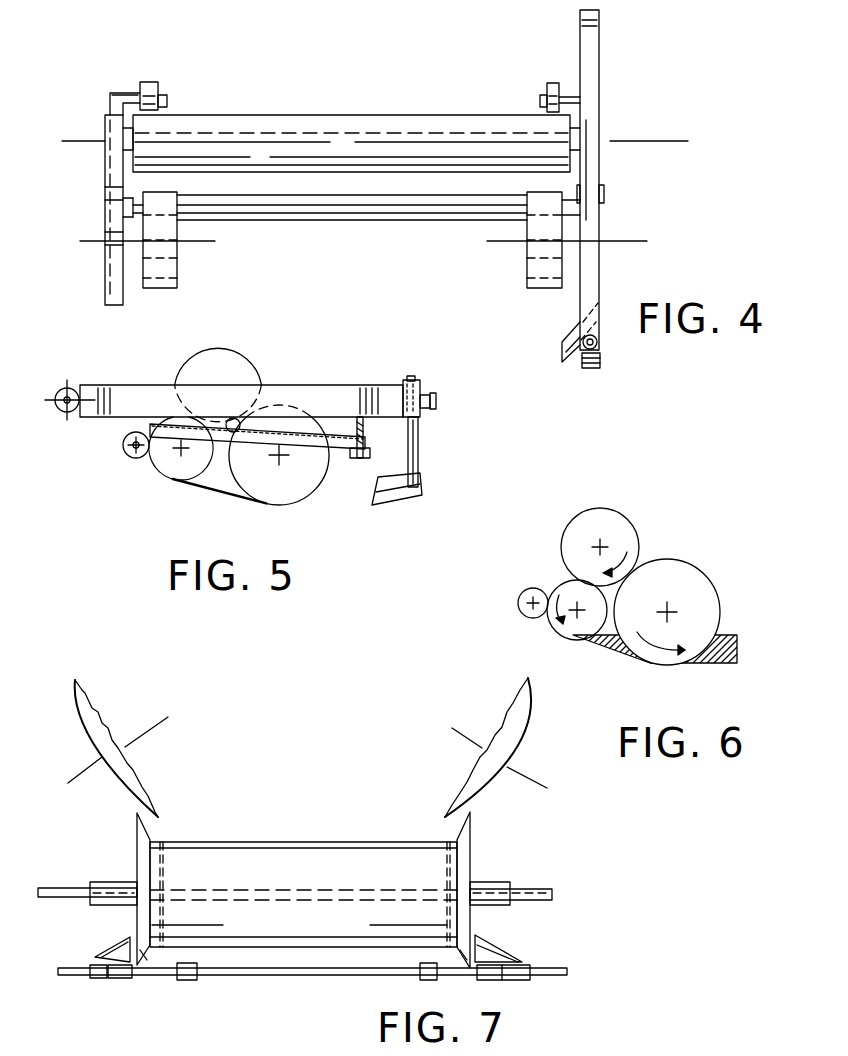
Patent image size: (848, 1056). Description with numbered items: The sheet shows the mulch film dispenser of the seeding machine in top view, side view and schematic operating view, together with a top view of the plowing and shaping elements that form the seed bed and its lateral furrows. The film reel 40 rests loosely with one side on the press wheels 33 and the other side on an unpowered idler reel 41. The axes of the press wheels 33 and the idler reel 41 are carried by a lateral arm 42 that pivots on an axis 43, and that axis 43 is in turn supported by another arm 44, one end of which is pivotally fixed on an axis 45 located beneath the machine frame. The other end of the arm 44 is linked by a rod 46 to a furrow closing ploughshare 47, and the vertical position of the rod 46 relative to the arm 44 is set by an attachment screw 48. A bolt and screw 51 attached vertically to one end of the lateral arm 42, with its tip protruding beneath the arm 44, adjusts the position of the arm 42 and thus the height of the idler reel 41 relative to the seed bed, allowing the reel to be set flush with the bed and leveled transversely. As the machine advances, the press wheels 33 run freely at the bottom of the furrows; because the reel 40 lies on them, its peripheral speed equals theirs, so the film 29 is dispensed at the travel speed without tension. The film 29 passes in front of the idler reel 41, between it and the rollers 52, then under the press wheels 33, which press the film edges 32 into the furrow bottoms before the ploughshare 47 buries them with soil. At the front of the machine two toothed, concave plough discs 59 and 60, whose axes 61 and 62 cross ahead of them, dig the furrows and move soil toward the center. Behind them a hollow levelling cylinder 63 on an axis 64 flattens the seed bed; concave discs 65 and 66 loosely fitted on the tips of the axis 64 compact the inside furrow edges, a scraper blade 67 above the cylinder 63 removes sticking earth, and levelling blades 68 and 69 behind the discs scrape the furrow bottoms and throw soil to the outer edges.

In FIG. 5, the film 29 is at (206, 492).
In FIG. 6, the film edges 32 is at (715, 663).
In FIG. 4, the press wheels 33 is at (167, 248).
In FIG. 5, the press wheels 33 is at (258, 478).
In FIG. 6, the press wheels 33 is at (697, 583).
In FIG. 4, the film reel 40 is at (400, 197).
In FIG. 5, the film reel 40 is at (230, 368).
In FIG. 6, the film reel 40 is at (618, 522).
In FIG. 4, the idler reel 41 is at (377, 123).
In FIG. 5, the idler reel 41 is at (175, 465).
In FIG. 6, the idler reel 41 is at (575, 625).
In FIG. 4, the lateral arm 42 is at (110, 170).
In FIG. 5, the lateral arm 42 is at (325, 447).
In FIG. 5, the axis 43 is at (238, 423).
In FIG. 4, the arm 44 is at (593, 125).
In FIG. 5, the arm 44 is at (335, 398).
In FIG. 5, the axis 45 is at (67, 388).
In FIG. 5, the rod 46 is at (420, 447).
In FIG. 5, the furrow closing ploughshare 47 is at (400, 500).
In FIG. 5, the attachment screw 48 is at (436, 401).
In FIG. 5, the bolt and screw 51 is at (368, 460).
In FIG. 4, the rollers 52 is at (148, 82).
In FIG. 5, the rollers 52 is at (123, 450).
In FIG. 6, the rollers 52 is at (517, 603).
In FIG. 7, the plough disc 59 is at (92, 744).
In FIG. 7, the plough disc 60 is at (503, 740).
In FIG. 7, the axis 61 is at (140, 735).
In FIG. 7, the axis 62 is at (460, 745).
In FIG. 7, the levelling cylinder 63 is at (292, 857).
In FIG. 7, the axis 64 is at (525, 890).
In FIG. 7, the concave disc 65 is at (142, 855).
In FIG. 7, the concave disc 66 is at (463, 868).
In FIG. 7, the scraper blade 67 is at (327, 962).
In FIG. 7, the levelling blade 68 is at (118, 950).
In FIG. 7, the levelling blade 69 is at (495, 952).